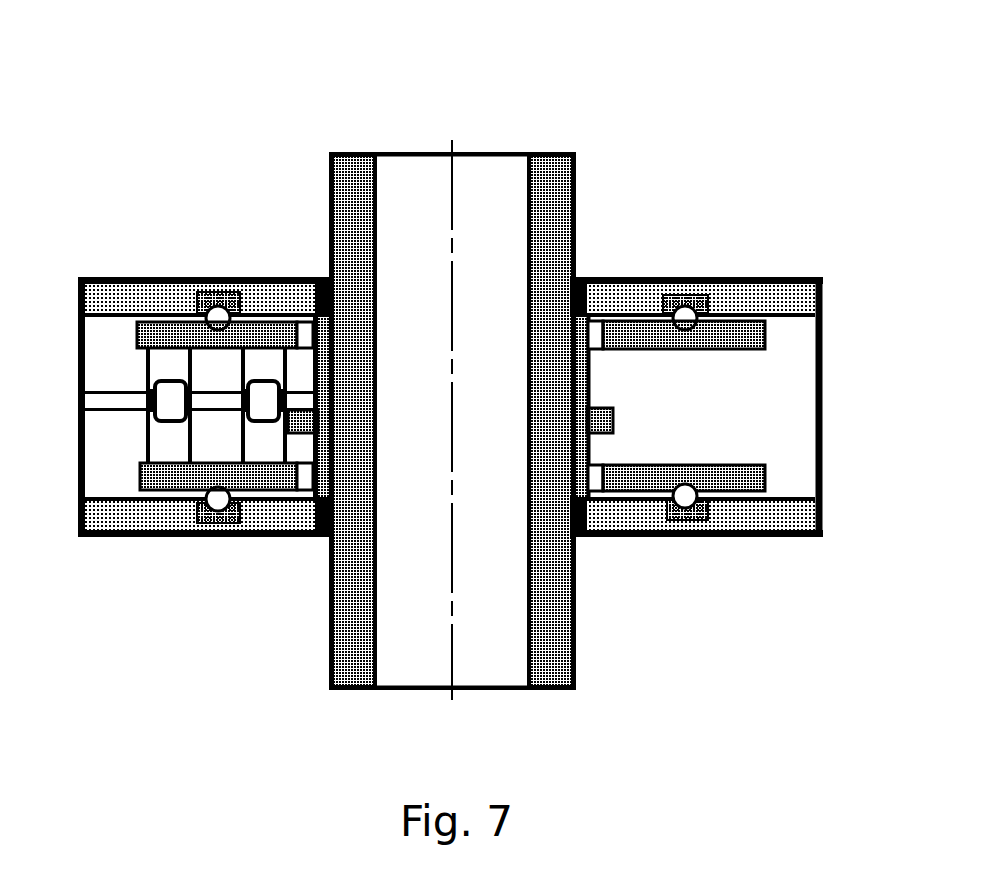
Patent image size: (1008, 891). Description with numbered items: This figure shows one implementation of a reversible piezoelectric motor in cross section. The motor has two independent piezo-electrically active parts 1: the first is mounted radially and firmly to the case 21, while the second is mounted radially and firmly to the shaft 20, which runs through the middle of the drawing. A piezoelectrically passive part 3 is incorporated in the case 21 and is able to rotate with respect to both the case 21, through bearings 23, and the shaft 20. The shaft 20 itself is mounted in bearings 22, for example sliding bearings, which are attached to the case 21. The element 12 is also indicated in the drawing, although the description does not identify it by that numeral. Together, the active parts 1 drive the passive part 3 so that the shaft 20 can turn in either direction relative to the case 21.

The piezo-electrically active part 1 is at (262, 362).
The piezoelectrically passive part 3 is at (188, 545).
The bearing sleeve 12 is at (730, 480).
The shaft 20 is at (555, 200).
The case 21 is at (650, 293).
The bearings 22 is at (320, 533).
The bearings 23 is at (685, 500).